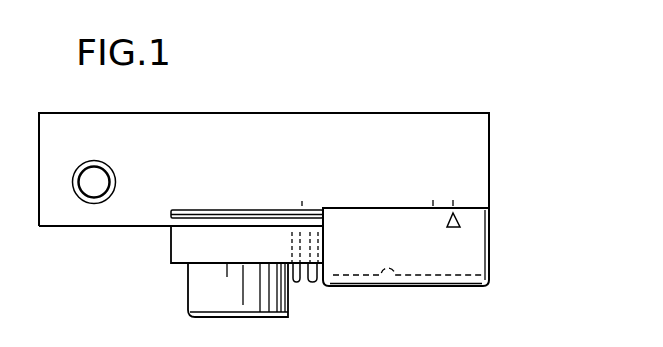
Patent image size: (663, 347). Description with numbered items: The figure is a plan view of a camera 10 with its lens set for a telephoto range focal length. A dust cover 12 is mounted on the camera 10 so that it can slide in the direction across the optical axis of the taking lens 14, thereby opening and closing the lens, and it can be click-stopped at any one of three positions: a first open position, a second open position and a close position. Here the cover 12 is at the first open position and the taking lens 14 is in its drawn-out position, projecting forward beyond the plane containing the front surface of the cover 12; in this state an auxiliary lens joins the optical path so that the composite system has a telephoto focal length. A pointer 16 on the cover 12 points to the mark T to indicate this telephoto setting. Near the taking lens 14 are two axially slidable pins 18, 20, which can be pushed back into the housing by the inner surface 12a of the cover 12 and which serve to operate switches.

The camera 10 is at (383, 112).
The dust cover 12 is at (482, 255).
The inner surface of the cover 12a is at (398, 285).
The taking lens 14 is at (190, 285).
The pointer 16 is at (460, 221).
The slide pin 18 is at (313, 282).
The slide pin 20 is at (296, 282).